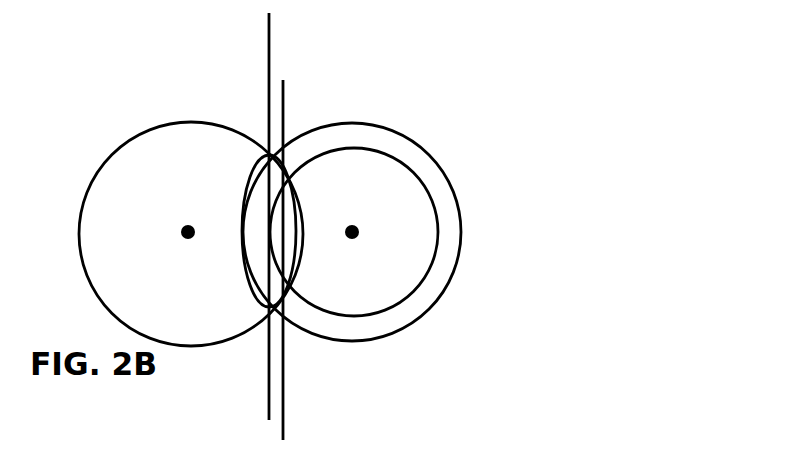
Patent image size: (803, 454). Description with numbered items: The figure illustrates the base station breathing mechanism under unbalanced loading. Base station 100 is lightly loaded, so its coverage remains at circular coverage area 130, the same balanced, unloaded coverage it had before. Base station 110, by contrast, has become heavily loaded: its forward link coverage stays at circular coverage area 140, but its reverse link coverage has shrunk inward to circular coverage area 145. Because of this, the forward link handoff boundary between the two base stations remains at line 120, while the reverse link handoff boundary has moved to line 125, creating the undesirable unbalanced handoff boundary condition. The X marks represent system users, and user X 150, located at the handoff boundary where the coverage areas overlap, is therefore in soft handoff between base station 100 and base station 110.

The base station 100 is at (185, 228).
The base station 110 is at (356, 228).
The line 120 is at (269, 63).
The line 125 is at (285, 417).
The circular coverage area 130 is at (190, 123).
The circular coverage area 140 is at (372, 124).
The circular coverage area 145 is at (417, 288).
The user X 150 is at (252, 222).